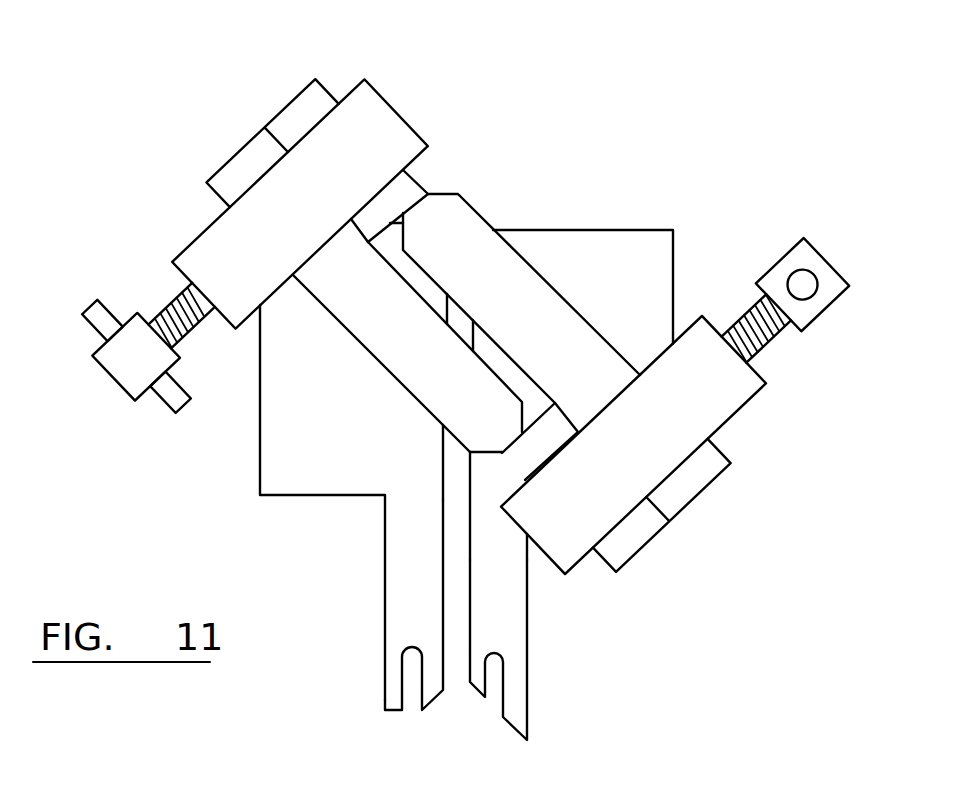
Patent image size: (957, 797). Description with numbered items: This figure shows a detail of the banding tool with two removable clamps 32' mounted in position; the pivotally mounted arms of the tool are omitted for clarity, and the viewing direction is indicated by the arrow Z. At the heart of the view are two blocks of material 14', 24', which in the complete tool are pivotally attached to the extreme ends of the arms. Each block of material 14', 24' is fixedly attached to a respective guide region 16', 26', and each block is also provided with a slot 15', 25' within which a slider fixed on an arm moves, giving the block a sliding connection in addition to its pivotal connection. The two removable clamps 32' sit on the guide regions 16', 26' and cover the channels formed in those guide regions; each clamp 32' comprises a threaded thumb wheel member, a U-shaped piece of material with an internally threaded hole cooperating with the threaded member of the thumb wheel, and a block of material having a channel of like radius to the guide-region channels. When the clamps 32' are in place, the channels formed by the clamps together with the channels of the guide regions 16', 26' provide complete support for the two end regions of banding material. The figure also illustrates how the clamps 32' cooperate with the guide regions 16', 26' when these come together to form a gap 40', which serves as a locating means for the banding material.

The viewing direction arrow Z is at (220, 95).
The block of material 14' is at (600, 332).
The slot 15' is at (573, 650).
The guide region 16' is at (714, 505).
The block of material 24' is at (301, 487).
The slot 25' is at (351, 608).
The guide region 26' is at (203, 143).
The removable clamp 32' is at (463, 301).
The gap 40' is at (495, 292).